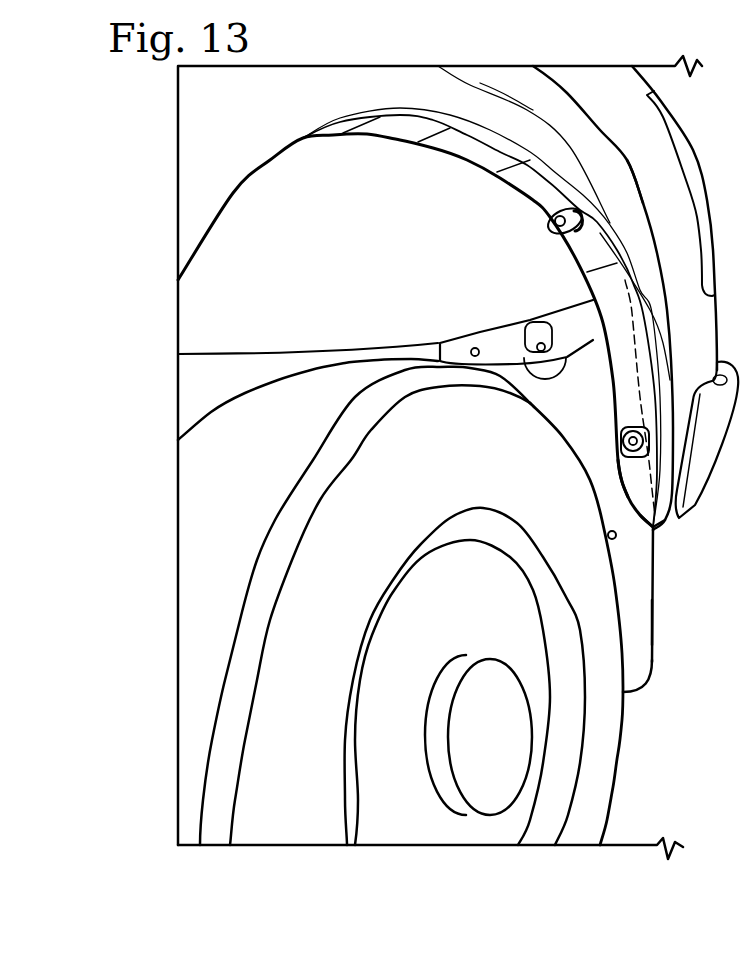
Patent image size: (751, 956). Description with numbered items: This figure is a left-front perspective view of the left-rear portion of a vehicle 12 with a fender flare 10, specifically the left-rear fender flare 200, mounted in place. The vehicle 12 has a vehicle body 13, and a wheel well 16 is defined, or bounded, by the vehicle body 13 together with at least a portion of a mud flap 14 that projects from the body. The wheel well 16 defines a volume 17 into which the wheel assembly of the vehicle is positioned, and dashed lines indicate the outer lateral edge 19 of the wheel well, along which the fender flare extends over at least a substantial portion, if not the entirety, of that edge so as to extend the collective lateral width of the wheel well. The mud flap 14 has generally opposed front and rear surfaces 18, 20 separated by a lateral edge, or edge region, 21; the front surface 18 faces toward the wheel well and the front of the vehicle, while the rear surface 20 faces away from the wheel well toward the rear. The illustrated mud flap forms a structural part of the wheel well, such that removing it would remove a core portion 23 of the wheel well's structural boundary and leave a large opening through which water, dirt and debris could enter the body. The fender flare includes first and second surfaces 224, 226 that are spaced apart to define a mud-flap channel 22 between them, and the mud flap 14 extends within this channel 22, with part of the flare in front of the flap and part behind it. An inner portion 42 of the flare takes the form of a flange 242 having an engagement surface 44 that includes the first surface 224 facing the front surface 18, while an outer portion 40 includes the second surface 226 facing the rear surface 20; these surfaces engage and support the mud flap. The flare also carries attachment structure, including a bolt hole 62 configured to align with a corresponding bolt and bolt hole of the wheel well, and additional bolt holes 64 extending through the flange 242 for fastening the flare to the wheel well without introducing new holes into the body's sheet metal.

The fender flare 10 is at (588, 96).
The vehicle 12 is at (702, 170).
The vehicle body 13 is at (718, 336).
The mud flap 14 is at (642, 690).
The wheel well 16 is at (637, 530).
The volume 17 is at (275, 215).
The front surface 18 is at (595, 421).
The outer lateral edge 19 is at (527, 144).
The rear surface 20 is at (655, 615).
The lateral edge 21 is at (653, 590).
The mud-flap channel 22 is at (620, 505).
The core portion 23 is at (553, 390).
The outer portion 40 is at (633, 163).
The inner portion 42 is at (480, 173).
The engagement surface 44 is at (522, 198).
The bolt hole 62 is at (635, 432).
The bolt holes 64 is at (563, 224).
The left-rear fender flare 200 is at (622, 112).
The first surface 224 is at (637, 515).
The second surface 226 is at (650, 525).
The flange 242 is at (432, 150).